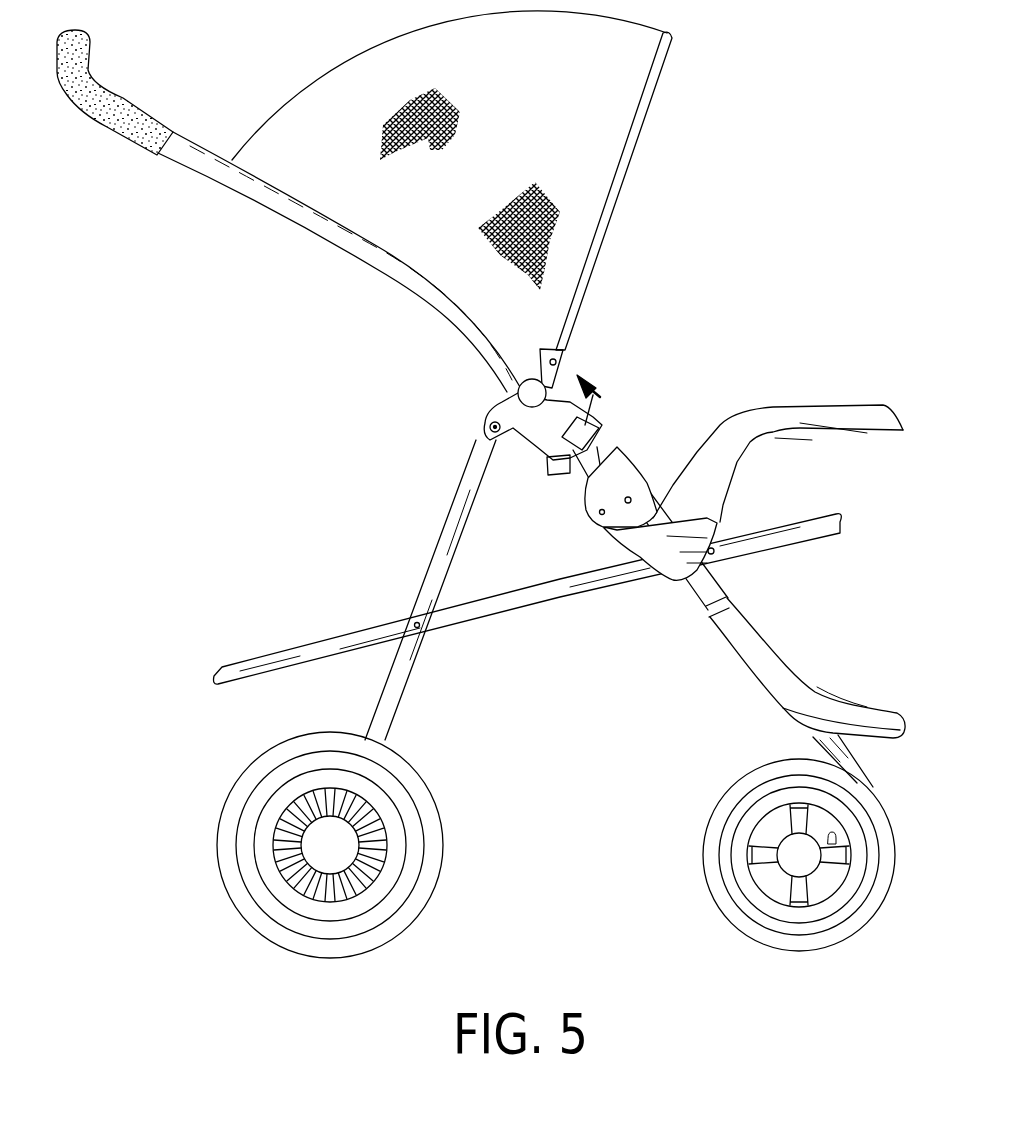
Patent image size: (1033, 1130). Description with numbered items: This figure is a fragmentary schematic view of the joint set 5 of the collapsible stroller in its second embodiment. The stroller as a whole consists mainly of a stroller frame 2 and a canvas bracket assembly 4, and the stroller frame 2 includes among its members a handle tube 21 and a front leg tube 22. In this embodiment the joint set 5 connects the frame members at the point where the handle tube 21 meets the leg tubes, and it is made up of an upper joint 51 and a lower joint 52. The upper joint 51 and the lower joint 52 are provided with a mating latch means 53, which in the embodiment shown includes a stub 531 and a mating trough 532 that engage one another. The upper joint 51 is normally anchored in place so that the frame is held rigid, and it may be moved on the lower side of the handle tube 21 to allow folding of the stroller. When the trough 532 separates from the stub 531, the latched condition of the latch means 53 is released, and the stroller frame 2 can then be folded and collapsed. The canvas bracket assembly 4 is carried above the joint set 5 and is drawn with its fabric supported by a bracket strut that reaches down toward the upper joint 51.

The stroller frame 2 is at (481, 408).
The handle tube 21 is at (268, 206).
The front leg tube 22 is at (707, 583).
The canvas bracket assembly 4 is at (646, 202).
The joint set 5 is at (647, 399).
The upper joint 51 is at (542, 428).
The lower joint 52 is at (602, 512).
The latch means 53 is at (600, 415).
The stub 531 is at (572, 458).
The trough 532 is at (592, 398).